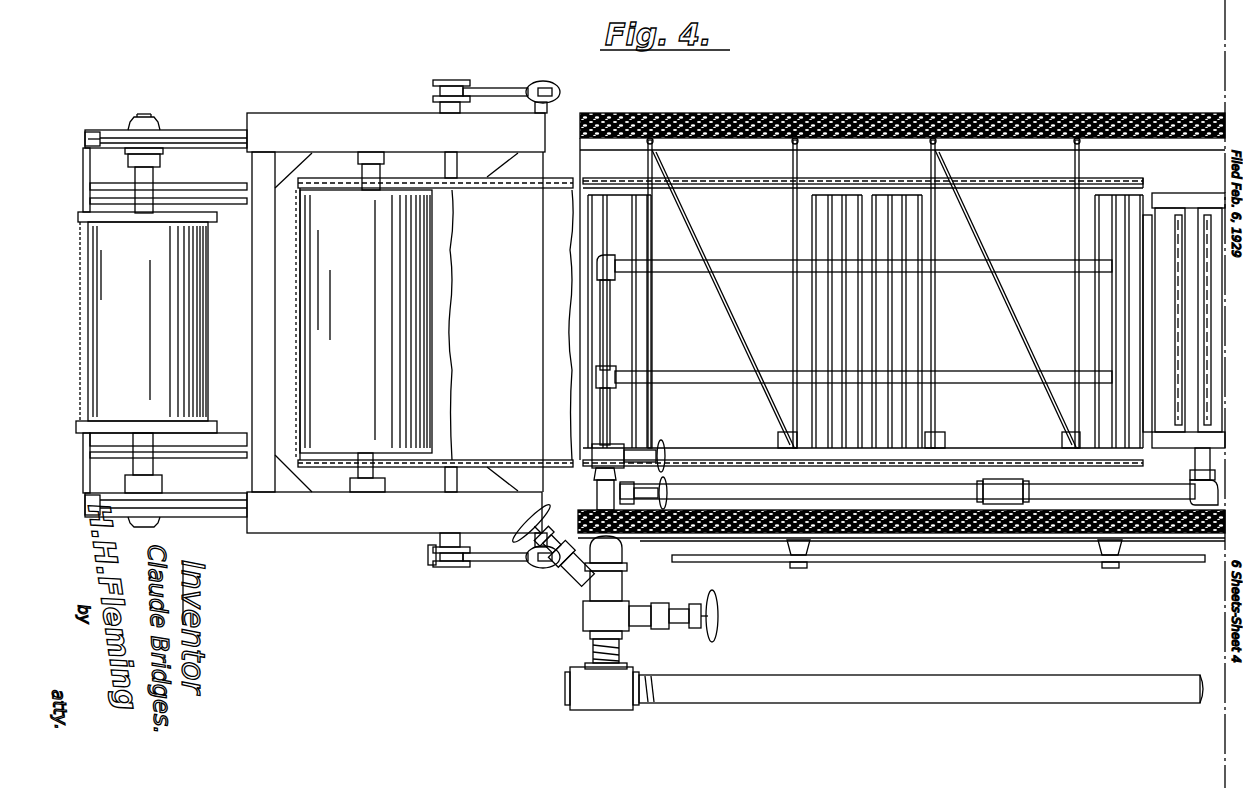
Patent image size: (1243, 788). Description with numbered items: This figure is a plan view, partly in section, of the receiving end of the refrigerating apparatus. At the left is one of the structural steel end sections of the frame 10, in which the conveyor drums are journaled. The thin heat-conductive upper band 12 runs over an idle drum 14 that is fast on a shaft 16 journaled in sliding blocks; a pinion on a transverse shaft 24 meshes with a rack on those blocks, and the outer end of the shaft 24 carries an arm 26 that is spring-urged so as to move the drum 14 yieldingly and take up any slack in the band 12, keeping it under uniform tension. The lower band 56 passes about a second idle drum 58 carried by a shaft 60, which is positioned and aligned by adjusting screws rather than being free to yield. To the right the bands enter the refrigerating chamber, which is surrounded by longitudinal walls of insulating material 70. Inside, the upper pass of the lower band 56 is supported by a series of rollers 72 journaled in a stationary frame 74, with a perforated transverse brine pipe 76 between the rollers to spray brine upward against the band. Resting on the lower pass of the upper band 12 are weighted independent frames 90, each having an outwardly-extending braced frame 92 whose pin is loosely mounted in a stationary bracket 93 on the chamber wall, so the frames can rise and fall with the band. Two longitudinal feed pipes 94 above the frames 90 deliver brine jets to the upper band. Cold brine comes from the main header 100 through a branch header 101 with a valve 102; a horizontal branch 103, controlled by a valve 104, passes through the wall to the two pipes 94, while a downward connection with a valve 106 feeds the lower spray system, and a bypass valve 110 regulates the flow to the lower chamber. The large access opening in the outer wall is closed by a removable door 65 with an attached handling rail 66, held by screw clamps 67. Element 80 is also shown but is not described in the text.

The frame 10 is at (388, 518).
The upper band 12 is at (533, 200).
The idle drum 14 is at (350, 432).
The shaft 16 is at (367, 468).
The transverse shaft 24 is at (445, 547).
The arm 26 is at (478, 92).
The lower band 56 is at (95, 425).
The idle drum 58 is at (98, 340).
The shaft 60 is at (148, 183).
The removable door 65 is at (1005, 540).
The rail 66 is at (878, 557).
The screw clamps 67 is at (1108, 565).
The insulating material 70 is at (1137, 113).
The rollers 72 is at (1165, 215).
The stationary frame 74 is at (1200, 200).
The transverse brine pipe 76 is at (1200, 435).
The auxiliary frame 80 is at (96, 198).
The independent frames 90 is at (965, 455).
The outwardly-extending frame 92 is at (795, 158).
The stationary bracket 93 is at (700, 148).
The feed pipes 94 is at (738, 262).
The main header 100 is at (872, 697).
The branch header 101 is at (612, 590).
The valve 102 is at (720, 630).
The horizontal branch 103 is at (612, 322).
The valve 104 is at (665, 445).
The valve 106 is at (670, 490).
The bypass valve 110 is at (517, 628).